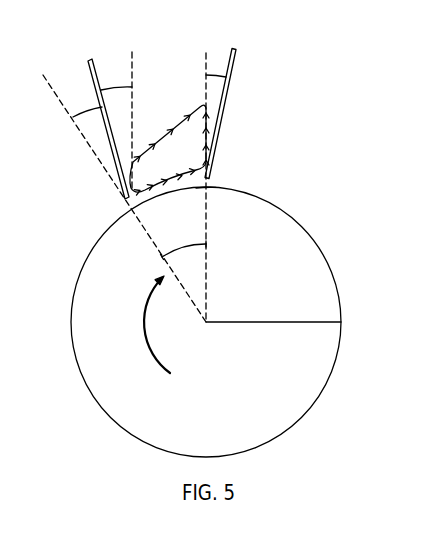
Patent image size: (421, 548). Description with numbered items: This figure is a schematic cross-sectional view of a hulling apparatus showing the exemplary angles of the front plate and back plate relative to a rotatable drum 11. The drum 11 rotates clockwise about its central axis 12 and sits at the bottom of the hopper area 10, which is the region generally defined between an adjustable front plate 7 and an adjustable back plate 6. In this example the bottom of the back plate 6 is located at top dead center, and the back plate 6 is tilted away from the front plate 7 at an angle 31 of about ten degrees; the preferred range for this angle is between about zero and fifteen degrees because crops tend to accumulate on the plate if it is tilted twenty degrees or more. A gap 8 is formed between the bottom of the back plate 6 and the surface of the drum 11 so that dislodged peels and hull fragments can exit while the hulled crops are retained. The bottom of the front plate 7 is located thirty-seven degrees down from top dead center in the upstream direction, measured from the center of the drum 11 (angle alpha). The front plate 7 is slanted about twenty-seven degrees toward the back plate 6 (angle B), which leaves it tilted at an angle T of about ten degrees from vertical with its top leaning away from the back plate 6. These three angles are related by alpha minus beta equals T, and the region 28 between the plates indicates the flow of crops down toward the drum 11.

The hopper area 10 is at (149, 163).
The front plate 7 is at (88, 64).
The back plate 6 is at (218, 157).
The angle 31 is at (218, 74).
The tilt angle T is at (112, 88).
The beta angle B is at (88, 110).
The chip flow region 28 is at (181, 117).
The gap 8 is at (205, 186).
The central axis 12 is at (206, 324).
The rotatable drum 11 is at (307, 388).